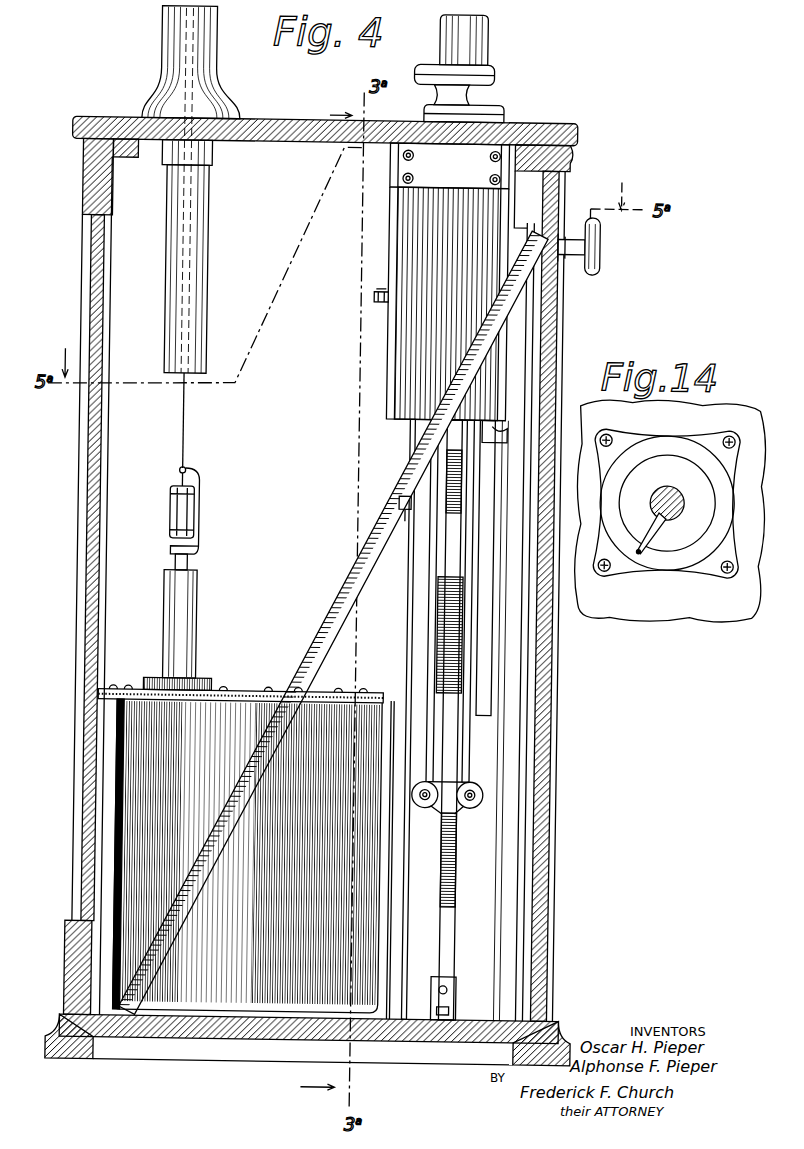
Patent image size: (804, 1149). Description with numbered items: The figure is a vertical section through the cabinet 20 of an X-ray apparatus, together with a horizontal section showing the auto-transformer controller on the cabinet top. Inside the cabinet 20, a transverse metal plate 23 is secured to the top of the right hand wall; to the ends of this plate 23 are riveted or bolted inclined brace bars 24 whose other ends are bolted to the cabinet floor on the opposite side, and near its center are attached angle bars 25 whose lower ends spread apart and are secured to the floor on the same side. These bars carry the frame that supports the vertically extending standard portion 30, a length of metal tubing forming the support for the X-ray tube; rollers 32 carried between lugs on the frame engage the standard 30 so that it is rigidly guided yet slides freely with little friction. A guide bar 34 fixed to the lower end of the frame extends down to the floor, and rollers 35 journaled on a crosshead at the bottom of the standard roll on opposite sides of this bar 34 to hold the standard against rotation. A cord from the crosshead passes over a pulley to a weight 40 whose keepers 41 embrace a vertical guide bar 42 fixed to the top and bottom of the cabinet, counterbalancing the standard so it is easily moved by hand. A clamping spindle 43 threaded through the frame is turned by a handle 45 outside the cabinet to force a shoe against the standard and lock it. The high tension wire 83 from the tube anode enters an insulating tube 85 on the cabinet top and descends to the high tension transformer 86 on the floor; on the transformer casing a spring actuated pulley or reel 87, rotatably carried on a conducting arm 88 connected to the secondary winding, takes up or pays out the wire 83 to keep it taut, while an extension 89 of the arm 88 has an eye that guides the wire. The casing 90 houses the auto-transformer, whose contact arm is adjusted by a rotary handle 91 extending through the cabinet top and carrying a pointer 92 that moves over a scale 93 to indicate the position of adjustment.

In FIG. 4, the cabinet 20 is at (77, 805).
In FIG. 14, the cabinet 20 is at (670, 511).
In FIG. 4, the transverse metal plate 23 is at (550, 188).
In FIG. 4, the inclined brace bars 24 is at (372, 506).
In FIG. 4, the angle bars 25 is at (555, 330).
In FIG. 4, the standard portion 30 is at (480, 35).
In FIG. 4, the roller 32 is at (488, 432).
In FIG. 4, the guide bar 34 is at (458, 905).
In FIG. 4, the rollers 35 is at (462, 806).
In FIG. 4, the weight 40 is at (429, 560).
In FIG. 4, the keepers 41 is at (402, 512).
In FIG. 4, the guide bar 42 is at (445, 590).
In FIG. 4, the clamping spindle 43 is at (583, 255).
In FIG. 4, the handle 45 is at (596, 245).
In FIG. 4, the high tension wire 83 is at (178, 420).
In FIG. 4, the insulating tube 85 is at (154, 50).
In FIG. 4, the high tension transformer 86 is at (245, 688).
In FIG. 4, the spring actuated pulley or reel 87 is at (171, 526).
In FIG. 4, the conducting arm 88 is at (194, 506).
In FIG. 4, the extension 89 is at (188, 468).
In FIG. 4, the casing 90 is at (384, 335).
In FIG. 4, the rotary handle 91 is at (407, 70).
In FIG. 14, the rotary handle 91 is at (667, 481).
In FIG. 14, the pointer 92 is at (651, 528).
In FIG. 4, the scale 93 is at (497, 112).
In FIG. 14, the scale 93 is at (668, 432).